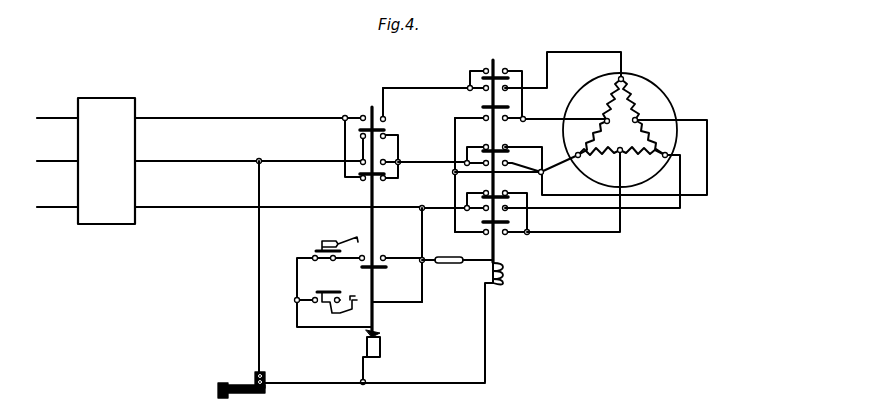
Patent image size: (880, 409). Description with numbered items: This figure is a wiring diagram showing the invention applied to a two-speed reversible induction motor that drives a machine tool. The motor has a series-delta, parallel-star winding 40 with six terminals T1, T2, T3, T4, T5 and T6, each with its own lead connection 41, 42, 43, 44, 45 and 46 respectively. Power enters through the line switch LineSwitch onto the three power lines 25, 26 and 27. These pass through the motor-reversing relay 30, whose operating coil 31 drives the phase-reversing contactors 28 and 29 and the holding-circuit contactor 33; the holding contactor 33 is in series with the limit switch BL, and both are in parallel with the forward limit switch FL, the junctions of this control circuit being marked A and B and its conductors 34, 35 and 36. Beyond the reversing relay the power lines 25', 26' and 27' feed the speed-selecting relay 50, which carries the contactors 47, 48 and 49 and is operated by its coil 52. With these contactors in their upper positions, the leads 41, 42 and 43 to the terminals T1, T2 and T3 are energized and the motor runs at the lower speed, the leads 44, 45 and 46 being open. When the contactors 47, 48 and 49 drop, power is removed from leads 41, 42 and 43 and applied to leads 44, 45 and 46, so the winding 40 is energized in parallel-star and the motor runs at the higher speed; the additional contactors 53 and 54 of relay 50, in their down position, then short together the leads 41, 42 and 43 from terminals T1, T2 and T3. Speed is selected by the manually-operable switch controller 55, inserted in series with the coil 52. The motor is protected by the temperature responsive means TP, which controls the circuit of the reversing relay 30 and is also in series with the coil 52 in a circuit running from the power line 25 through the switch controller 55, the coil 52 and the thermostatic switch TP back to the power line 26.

The line switch LineSwitch is at (90, 225).
The power line 25 is at (278, 197).
The power line 26 is at (249, 152).
The power line 27 is at (240, 108).
The power line 25' is at (440, 199).
The power line 26' is at (432, 154).
The power line 27' is at (426, 78).
The phase-reversing contactor 28 is at (373, 125).
The phase-reversing contactor 29 is at (369, 180).
The motor-reversing relay 30 is at (377, 313).
The operating coil 31 is at (382, 343).
The holding-circuit contactor 33 is at (380, 270).
The conductor 34 is at (366, 368).
The conductor 35 is at (303, 382).
The conductor 36 is at (260, 318).
The series-delta, parallel-star winding 40 is at (620, 130).
The lead connection 41 is at (523, 104).
The lead connection 42 is at (700, 196).
The lead connection 43 is at (586, 232).
The lead connection 44 is at (547, 56).
The lead connection 45 is at (512, 163).
The lead connection 46 is at (650, 208).
The contactor 47 is at (493, 52).
The contactor 48 is at (501, 150).
The contactor 49 is at (493, 185).
The relay 50 is at (494, 246).
The operating coil 52 is at (503, 279).
The contactor 53 is at (486, 109).
The contactor 54 is at (483, 223).
The manually-operable switch controller 55 is at (440, 263).
The junction A is at (420, 256).
The junction B is at (369, 391).
The limit switch BL is at (317, 253).
The forward limit switch FL is at (336, 290).
The temperature responsive means TP is at (224, 377).
The terminal T1 is at (605, 119).
The terminal T2 is at (637, 118).
The terminal T3 is at (618, 153).
The terminal T4 is at (623, 77).
The terminal T5 is at (566, 169).
The terminal T6 is at (668, 153).